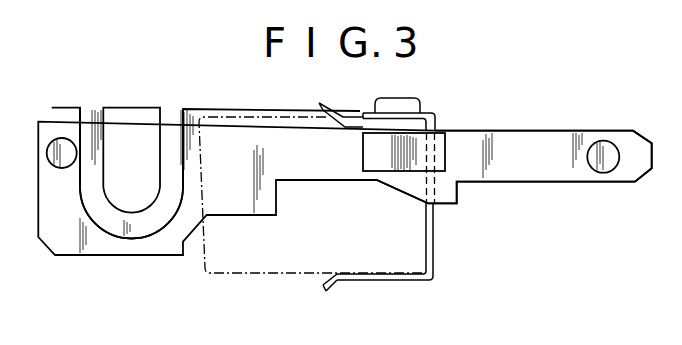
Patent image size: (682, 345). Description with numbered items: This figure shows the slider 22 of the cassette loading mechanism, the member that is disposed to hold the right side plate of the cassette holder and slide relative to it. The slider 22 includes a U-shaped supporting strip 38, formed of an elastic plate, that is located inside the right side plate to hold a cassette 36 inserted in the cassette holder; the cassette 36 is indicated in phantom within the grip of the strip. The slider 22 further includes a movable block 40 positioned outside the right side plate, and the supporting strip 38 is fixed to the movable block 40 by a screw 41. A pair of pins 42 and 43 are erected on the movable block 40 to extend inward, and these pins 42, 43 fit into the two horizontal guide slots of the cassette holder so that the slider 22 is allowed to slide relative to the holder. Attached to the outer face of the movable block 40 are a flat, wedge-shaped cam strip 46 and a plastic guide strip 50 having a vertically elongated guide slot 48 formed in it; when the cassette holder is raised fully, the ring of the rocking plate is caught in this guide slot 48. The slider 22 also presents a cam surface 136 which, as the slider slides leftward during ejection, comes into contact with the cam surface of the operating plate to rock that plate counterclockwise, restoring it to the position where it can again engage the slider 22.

The slider 22 is at (67, 246).
The cassette 36 is at (262, 266).
The U-shaped supporting strip 38 is at (384, 281).
The movable block 40 is at (518, 169).
The screw 41 is at (423, 101).
The pin 42 is at (62, 169).
The pin 43 is at (606, 173).
The cam strip 46 is at (377, 171).
The guide slot 48 is at (130, 152).
The guide strip 50 is at (137, 233).
The cam surface 136 is at (403, 193).